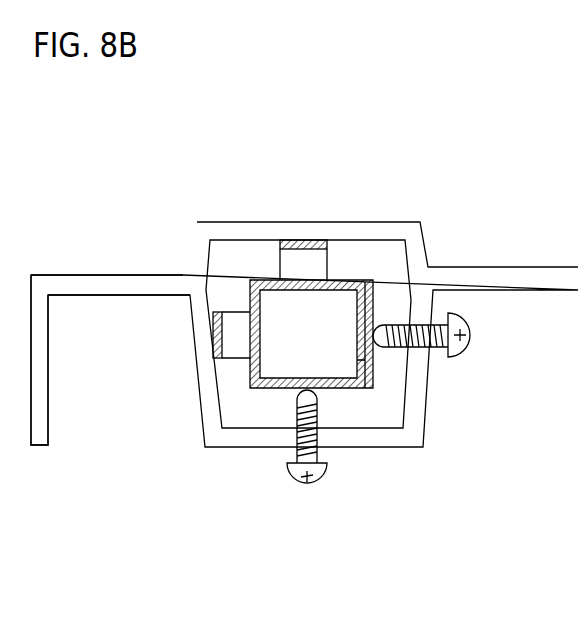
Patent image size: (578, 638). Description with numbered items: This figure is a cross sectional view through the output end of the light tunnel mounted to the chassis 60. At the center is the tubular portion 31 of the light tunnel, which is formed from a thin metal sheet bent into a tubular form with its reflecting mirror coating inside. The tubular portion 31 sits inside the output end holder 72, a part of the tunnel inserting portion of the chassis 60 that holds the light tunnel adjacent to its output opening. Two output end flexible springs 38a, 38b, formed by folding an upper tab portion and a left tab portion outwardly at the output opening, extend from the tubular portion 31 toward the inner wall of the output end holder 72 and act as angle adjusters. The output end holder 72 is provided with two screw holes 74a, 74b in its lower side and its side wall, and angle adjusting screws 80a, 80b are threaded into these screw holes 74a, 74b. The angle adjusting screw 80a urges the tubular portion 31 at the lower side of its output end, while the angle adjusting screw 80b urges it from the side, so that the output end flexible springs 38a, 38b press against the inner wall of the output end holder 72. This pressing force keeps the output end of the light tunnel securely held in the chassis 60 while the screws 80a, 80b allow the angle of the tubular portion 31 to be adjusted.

The chassis 60 is at (128, 288).
The output end holder 72 is at (388, 228).
The tubular portion 31 is at (252, 383).
The output end flexible spring 38a is at (302, 242).
The output end flexible spring 38b is at (213, 339).
The screw hole 74a is at (318, 447).
The screw hole 74b is at (436, 348).
The angle adjusting screw 80a is at (293, 481).
The angle adjusting screw 80b is at (458, 343).